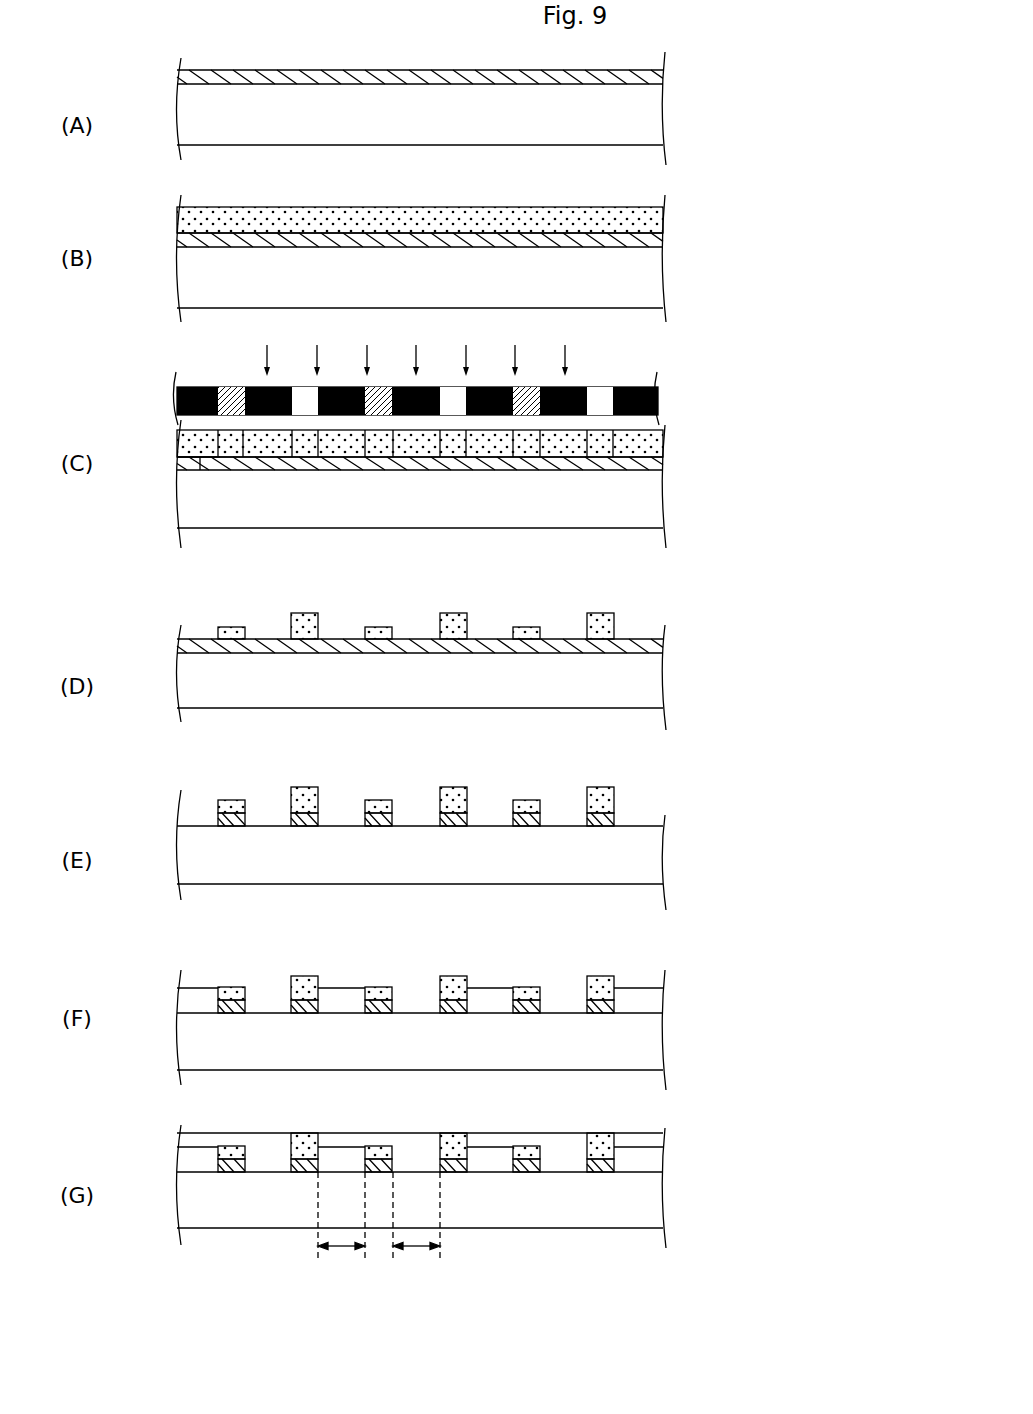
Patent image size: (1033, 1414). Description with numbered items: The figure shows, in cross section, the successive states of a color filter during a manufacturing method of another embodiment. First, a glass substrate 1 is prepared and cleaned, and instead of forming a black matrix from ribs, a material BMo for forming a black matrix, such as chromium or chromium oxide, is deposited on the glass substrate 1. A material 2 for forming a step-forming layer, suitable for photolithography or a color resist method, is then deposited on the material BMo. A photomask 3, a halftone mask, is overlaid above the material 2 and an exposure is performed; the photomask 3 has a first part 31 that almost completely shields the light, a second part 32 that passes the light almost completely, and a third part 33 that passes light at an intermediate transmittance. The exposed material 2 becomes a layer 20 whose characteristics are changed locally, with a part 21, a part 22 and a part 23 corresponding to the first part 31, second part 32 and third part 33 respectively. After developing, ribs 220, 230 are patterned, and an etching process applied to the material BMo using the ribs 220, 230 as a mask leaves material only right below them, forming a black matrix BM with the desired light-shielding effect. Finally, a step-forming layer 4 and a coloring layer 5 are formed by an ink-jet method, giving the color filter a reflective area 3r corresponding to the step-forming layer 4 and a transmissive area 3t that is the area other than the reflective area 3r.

The glass substrate 1 is at (650, 128).
The material for forming a black matrix BMo is at (672, 77).
The material for forming a step-forming layer 2 is at (668, 211).
The photomask 3 is at (457, 381).
The first part of the photomask 31 is at (632, 395).
The second part of the photomask 32 is at (598, 387).
The third part of the photomask 33 is at (228, 387).
The layer 20 is at (465, 465).
The part of the layer corresponding to the first part 21 is at (623, 460).
The part of the layer corresponding to the second part 22 is at (600, 448).
The part of the layer corresponding to the third part 23 is at (213, 468).
The rib 230 is at (524, 627).
The rib 220 is at (596, 613).
The black matrix BM is at (605, 820).
The step-forming layer 4 is at (482, 988).
The coloring layer 5 is at (472, 1140).
The reflective area 3r is at (341, 1226).
The transmissive area 3t is at (416, 1226).